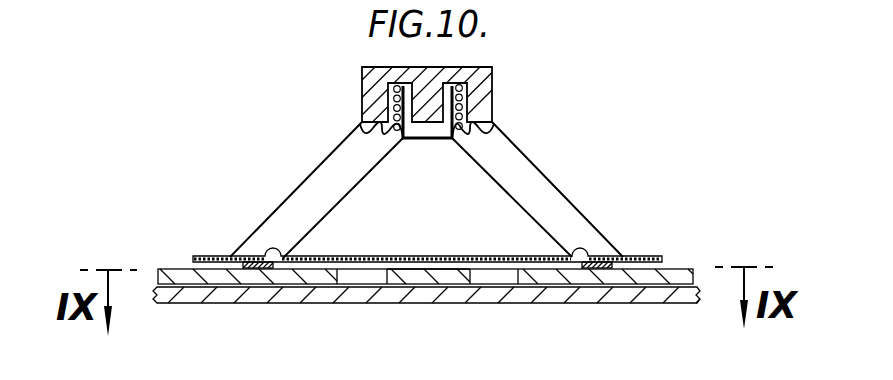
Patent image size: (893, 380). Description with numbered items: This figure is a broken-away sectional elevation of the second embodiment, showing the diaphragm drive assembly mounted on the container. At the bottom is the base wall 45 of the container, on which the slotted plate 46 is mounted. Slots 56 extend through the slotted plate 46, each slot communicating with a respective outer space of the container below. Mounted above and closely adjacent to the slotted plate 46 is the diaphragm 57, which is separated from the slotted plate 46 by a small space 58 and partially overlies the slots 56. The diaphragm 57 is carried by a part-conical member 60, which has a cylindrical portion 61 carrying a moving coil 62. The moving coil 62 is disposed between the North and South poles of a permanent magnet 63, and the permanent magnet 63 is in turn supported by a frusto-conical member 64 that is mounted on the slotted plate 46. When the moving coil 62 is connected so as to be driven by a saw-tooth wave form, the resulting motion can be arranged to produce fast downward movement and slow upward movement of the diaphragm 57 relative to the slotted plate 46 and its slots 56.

The base wall 45 is at (257, 297).
The slotted plate 46 is at (173, 275).
The slot 56 is at (365, 280).
The diaphragm 57 is at (390, 257).
The small space 58 is at (443, 266).
The part-conical member 60 is at (503, 190).
The cylindrical portion 61 is at (447, 138).
The moving coil 62 is at (465, 86).
The permanent magnet 63 is at (491, 70).
The frusto-conical member 64 is at (292, 192).